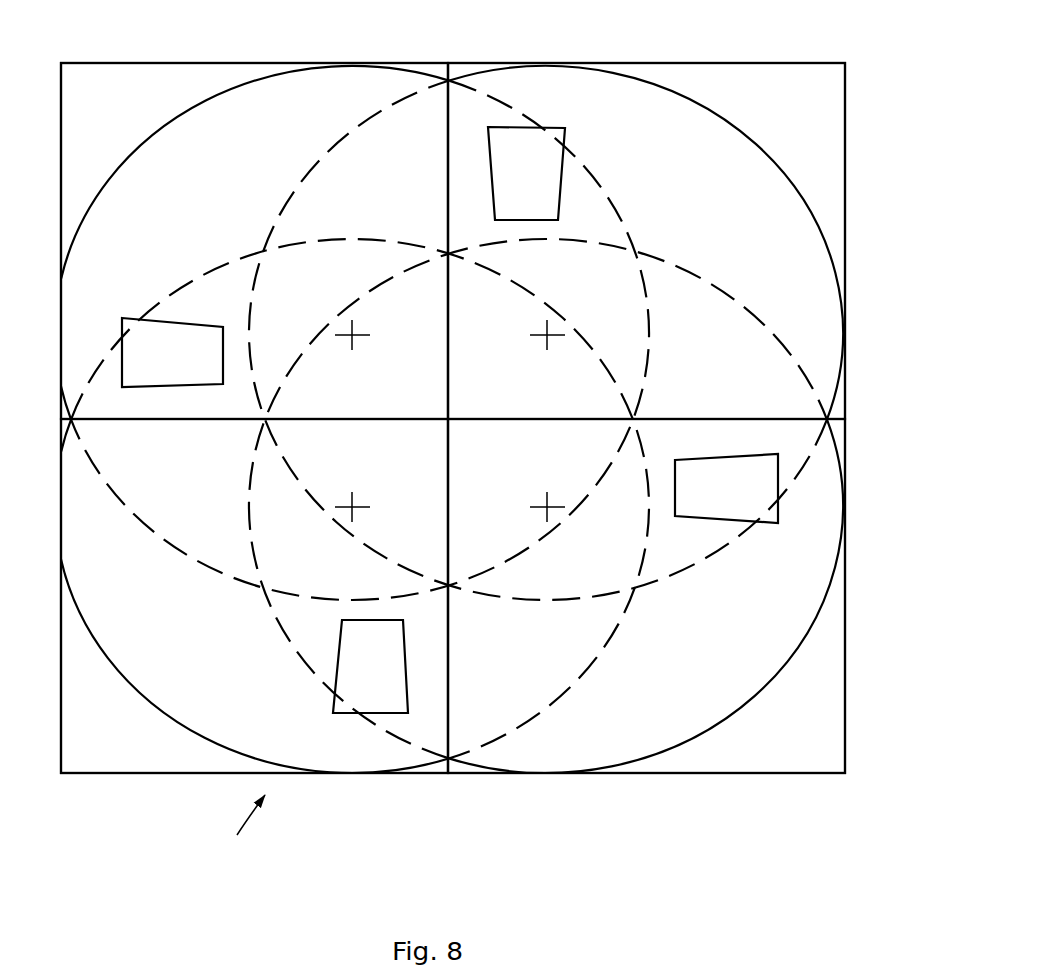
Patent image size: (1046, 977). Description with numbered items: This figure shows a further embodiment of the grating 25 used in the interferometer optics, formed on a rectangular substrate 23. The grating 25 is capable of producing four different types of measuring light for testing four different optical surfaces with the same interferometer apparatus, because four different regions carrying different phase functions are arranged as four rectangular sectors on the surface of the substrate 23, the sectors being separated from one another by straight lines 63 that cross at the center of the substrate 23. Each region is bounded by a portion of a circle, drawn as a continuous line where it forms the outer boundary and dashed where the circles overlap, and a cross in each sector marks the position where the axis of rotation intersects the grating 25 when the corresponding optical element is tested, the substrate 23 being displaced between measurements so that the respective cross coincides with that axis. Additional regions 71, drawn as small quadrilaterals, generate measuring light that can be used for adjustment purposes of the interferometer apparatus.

The substrate 23 is at (737, 63).
The grating 25 is at (246, 831).
The straight lines 63 is at (448, 675).
The additional regions 71 is at (540, 183).